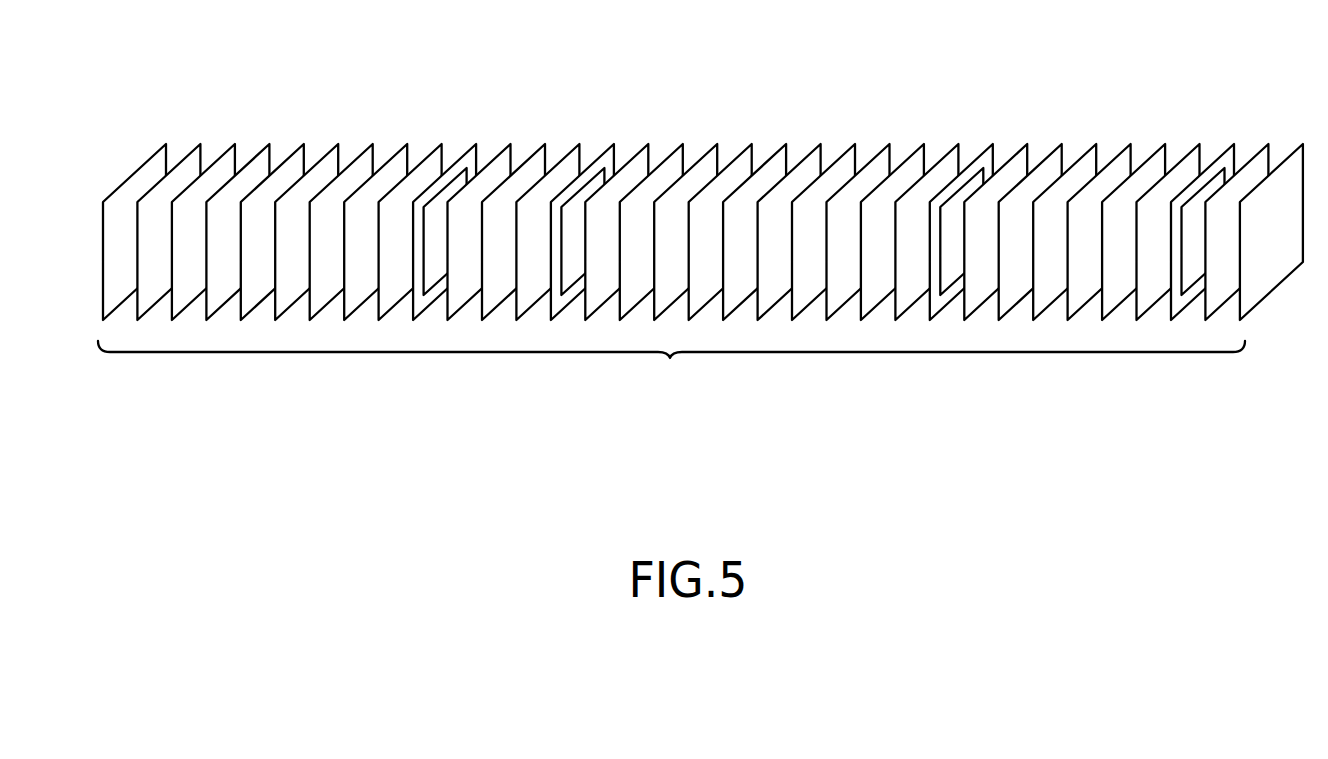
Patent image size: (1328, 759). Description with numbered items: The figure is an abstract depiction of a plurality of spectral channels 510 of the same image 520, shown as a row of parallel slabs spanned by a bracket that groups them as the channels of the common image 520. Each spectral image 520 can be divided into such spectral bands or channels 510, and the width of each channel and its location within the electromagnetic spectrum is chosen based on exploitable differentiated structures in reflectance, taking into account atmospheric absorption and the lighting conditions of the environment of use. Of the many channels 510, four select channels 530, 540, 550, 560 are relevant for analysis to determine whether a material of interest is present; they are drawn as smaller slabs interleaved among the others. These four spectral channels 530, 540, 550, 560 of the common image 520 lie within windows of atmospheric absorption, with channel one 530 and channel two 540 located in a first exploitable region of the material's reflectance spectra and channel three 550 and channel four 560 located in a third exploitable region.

The spectral channels 510 is at (700, 239).
The image 520 is at (168, 147).
The channel 1 530 is at (479, 120).
The channel 2 540 is at (618, 120).
The channel 3 550 is at (998, 120).
The channel 4 560 is at (1238, 120).